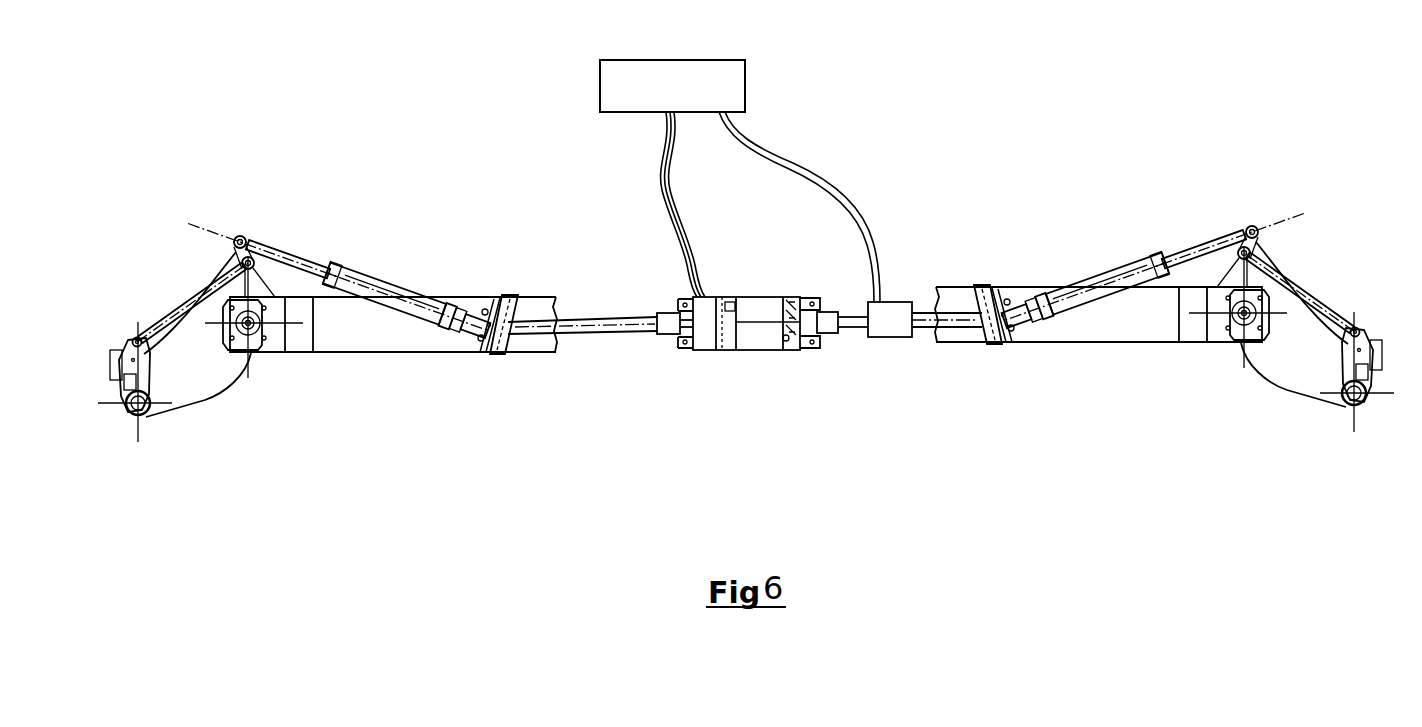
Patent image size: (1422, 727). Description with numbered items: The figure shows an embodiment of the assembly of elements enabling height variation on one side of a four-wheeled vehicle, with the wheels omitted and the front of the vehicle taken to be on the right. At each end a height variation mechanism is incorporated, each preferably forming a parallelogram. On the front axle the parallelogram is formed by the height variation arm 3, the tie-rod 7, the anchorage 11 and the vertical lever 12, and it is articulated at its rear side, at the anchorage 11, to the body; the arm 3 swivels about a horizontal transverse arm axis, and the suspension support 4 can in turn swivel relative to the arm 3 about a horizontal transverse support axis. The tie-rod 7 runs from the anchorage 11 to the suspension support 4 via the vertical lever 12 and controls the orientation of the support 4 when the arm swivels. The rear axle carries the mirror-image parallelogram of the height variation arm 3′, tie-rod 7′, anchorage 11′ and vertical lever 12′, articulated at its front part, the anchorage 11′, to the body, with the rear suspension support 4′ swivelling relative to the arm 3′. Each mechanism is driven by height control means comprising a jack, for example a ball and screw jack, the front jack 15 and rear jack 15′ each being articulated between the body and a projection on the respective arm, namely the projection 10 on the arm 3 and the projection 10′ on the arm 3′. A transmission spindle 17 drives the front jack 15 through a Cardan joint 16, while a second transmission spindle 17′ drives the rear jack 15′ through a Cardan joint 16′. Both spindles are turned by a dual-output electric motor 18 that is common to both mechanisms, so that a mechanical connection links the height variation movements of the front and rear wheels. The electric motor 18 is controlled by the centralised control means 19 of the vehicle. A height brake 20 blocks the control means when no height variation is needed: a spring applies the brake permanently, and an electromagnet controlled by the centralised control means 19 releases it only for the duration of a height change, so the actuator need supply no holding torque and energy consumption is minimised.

The height variation arm 3 is at (1295, 363).
The height variation arm 3′ is at (202, 378).
The suspension support 4 is at (1377, 350).
The suspension support 4′ is at (118, 360).
The tie-rod 7 is at (1322, 302).
The tie-rod 7′ is at (181, 311).
The projection 10 is at (1267, 253).
The projection 10′ is at (226, 258).
The anchorage 11 is at (1198, 328).
The anchorage 11′ is at (298, 338).
The vertical lever 12 is at (1378, 378).
The vertical lever 12′ is at (126, 392).
The jack 15 is at (1125, 268).
The jack 15′ is at (372, 284).
The Cardan joint 16 is at (999, 264).
The Cardan joint 16′ is at (496, 262).
The transmission spindle 17 is at (927, 330).
The transmission spindle 17′ is at (608, 332).
The electric motor 18 is at (766, 298).
The centralised control means 19 is at (692, 98).
The height brake 20 is at (909, 290).